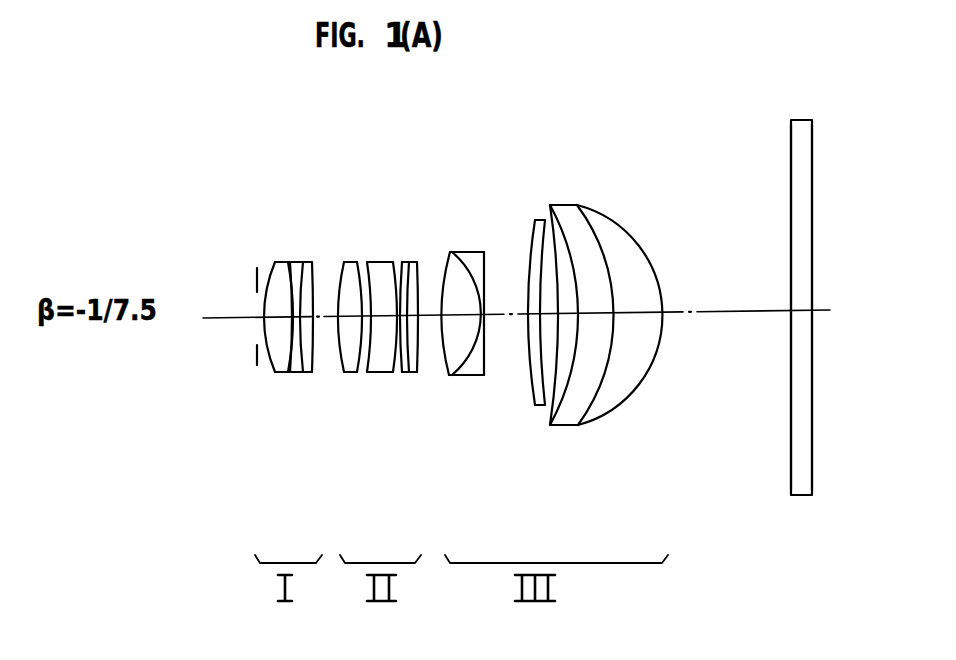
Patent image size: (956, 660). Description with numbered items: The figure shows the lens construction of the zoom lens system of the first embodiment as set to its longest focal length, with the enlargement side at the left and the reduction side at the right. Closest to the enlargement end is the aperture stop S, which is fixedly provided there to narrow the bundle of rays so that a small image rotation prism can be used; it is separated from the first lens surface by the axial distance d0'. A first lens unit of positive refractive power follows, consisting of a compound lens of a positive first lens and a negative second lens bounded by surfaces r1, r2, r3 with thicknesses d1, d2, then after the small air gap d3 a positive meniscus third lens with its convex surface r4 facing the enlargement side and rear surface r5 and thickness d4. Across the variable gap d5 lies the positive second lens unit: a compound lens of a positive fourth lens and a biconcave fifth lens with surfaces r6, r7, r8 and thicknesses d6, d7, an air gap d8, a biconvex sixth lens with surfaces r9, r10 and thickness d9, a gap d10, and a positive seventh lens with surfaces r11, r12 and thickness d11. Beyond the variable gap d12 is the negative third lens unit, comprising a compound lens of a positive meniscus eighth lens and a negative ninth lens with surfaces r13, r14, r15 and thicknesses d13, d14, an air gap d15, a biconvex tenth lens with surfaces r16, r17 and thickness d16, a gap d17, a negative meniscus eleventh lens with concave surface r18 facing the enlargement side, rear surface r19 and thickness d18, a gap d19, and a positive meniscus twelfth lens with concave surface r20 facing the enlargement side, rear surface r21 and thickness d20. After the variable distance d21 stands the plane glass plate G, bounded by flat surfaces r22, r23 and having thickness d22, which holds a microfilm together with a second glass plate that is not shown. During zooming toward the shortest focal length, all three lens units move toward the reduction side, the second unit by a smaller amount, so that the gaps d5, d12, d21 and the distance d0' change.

The aperture stop S is at (254, 276).
The plane glass plate G is at (791, 122).
The radius of curvature r1 is at (275, 262).
The radius of curvature r2 is at (286, 261).
The radius of curvature r3 is at (290, 261).
The radius of curvature r4 is at (301, 261).
The radius of curvature r5 is at (312, 261).
The radius of curvature r6 is at (344, 261).
The radius of curvature r7 is at (358, 261).
The radius of curvature r8 is at (368, 261).
The radius of curvature r9 is at (394, 261).
The radius of curvature r10 is at (404, 261).
The radius of curvature r11 is at (410, 261).
The radius of curvature r12 is at (418, 261).
The radius of curvature r13 is at (451, 252).
The radius of curvature r14 is at (484, 252).
The radius of curvature r15 is at (486, 285).
The radius of curvature r16 is at (535, 220).
The radius of curvature r17 is at (545, 220).
The radius of curvature r18 is at (562, 205).
The radius of curvature r19 is at (577, 206).
The radius of curvature r20 is at (602, 220).
The radius of curvature r21 is at (637, 226).
The radius of curvature r22 is at (791, 156).
The radius of curvature r23 is at (808, 230).
The axial distance d0' is at (235, 408).
The axial distance d1 is at (281, 373).
The axial distance d2 is at (290, 373).
The axial distance d3 is at (297, 373).
The axial distance d4 is at (307, 373).
The axial distance d5 is at (329, 373).
The axial distance d6 is at (350, 373).
The axial distance d7 is at (363, 373).
The axial distance d8 is at (381, 373).
The axial distance d9 is at (397, 373).
The axial distance d10 is at (406, 373).
The axial distance d11 is at (414, 373).
The axial distance d12 is at (447, 378).
The axial distance d13 is at (470, 375).
The axial distance d14 is at (497, 318).
The axial distance d15 is at (536, 405).
The axial distance d16 is at (556, 426).
The axial distance d17 is at (587, 315).
The axial distance d18 is at (600, 425).
The axial distance d19 is at (637, 412).
The axial distance d20 is at (645, 380).
The axial distance d21 is at (727, 315).
The axial distance d22 is at (804, 318).